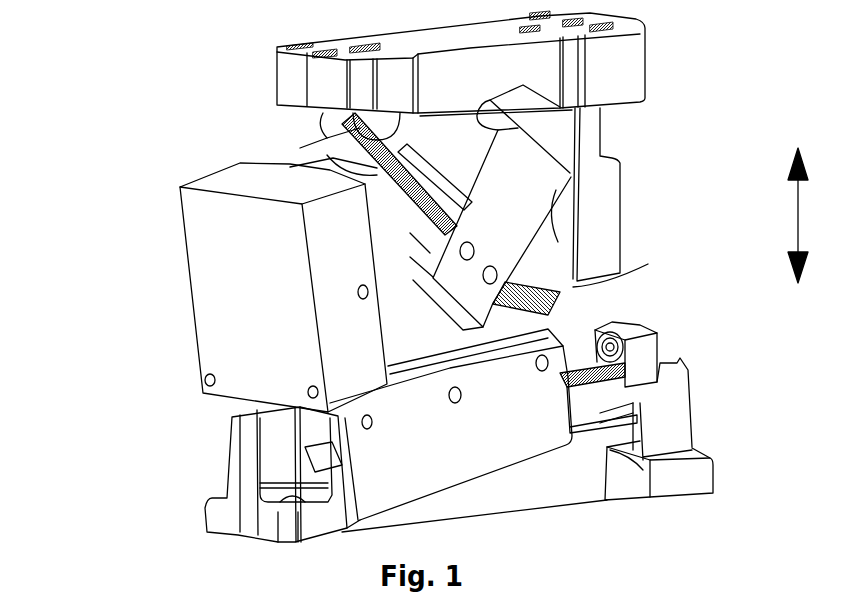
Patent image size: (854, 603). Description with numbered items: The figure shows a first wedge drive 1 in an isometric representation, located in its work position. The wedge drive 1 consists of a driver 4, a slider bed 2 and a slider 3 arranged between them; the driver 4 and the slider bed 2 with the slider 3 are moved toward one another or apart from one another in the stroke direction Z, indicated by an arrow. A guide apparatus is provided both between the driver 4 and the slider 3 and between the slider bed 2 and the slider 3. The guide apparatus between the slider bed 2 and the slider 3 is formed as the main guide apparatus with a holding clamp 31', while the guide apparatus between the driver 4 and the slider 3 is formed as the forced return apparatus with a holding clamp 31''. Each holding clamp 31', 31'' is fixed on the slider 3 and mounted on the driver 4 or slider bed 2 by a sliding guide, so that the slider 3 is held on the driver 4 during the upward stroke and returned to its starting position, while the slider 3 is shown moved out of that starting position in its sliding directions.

The wedge drive 1 is at (96, 34).
The slider bed 2 is at (680, 417).
The slider 3 is at (207, 267).
The driver 4 is at (634, 81).
The holding clamp 31' is at (522, 356).
The holding clamp 31'' is at (500, 207).